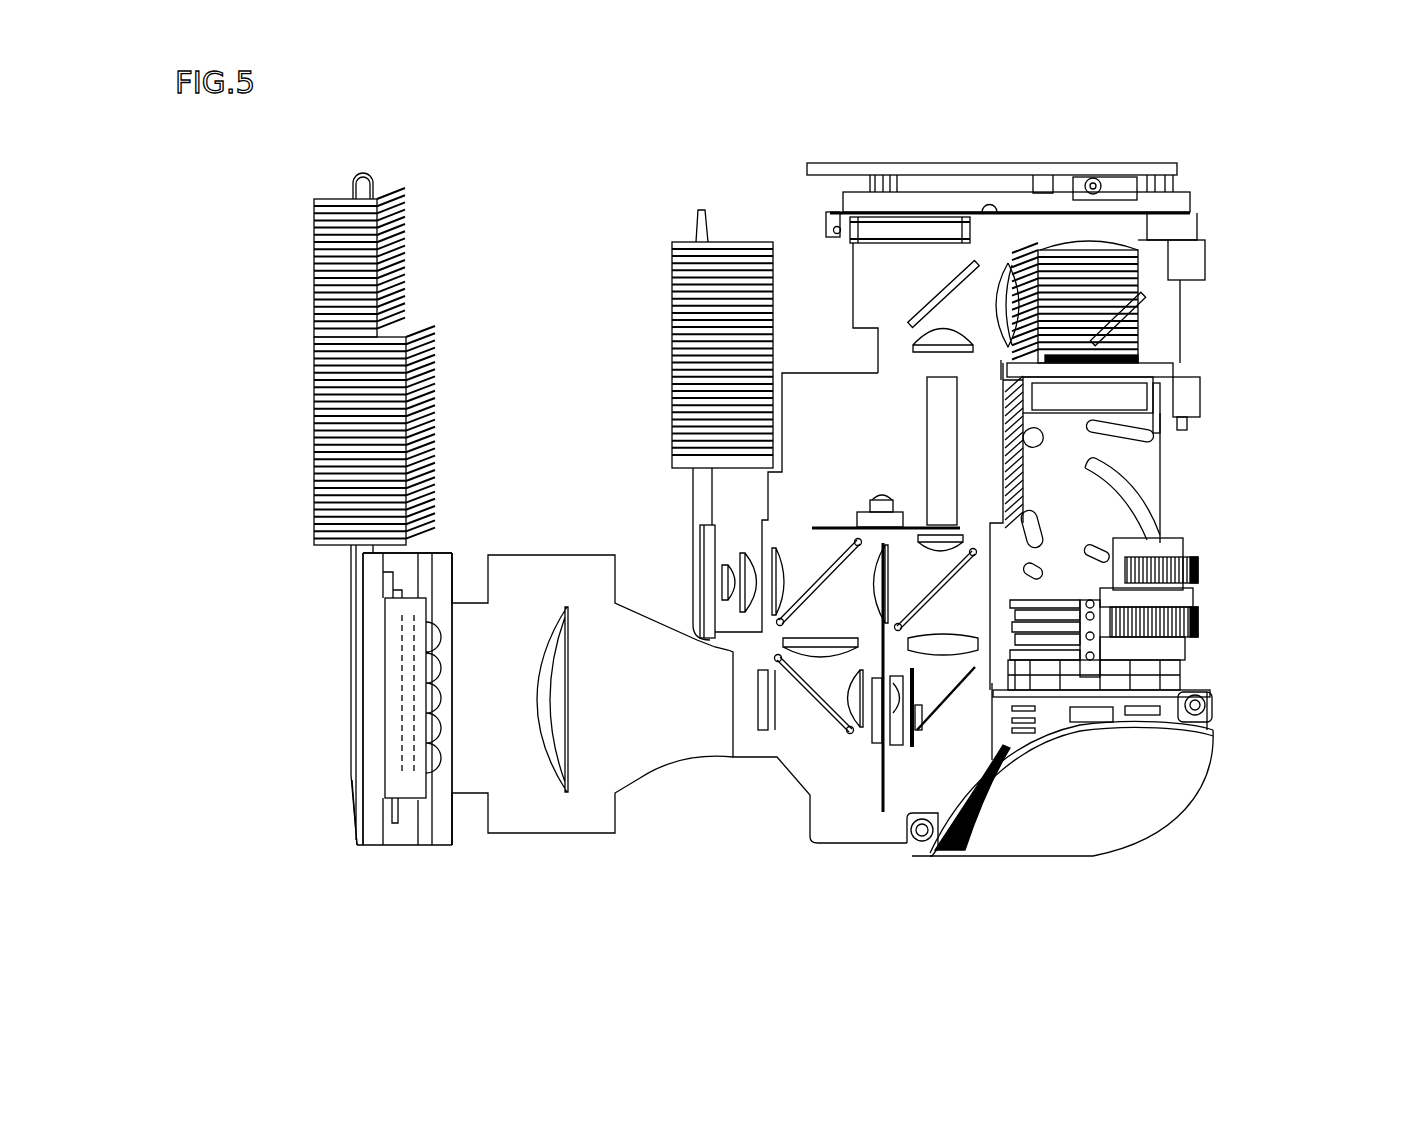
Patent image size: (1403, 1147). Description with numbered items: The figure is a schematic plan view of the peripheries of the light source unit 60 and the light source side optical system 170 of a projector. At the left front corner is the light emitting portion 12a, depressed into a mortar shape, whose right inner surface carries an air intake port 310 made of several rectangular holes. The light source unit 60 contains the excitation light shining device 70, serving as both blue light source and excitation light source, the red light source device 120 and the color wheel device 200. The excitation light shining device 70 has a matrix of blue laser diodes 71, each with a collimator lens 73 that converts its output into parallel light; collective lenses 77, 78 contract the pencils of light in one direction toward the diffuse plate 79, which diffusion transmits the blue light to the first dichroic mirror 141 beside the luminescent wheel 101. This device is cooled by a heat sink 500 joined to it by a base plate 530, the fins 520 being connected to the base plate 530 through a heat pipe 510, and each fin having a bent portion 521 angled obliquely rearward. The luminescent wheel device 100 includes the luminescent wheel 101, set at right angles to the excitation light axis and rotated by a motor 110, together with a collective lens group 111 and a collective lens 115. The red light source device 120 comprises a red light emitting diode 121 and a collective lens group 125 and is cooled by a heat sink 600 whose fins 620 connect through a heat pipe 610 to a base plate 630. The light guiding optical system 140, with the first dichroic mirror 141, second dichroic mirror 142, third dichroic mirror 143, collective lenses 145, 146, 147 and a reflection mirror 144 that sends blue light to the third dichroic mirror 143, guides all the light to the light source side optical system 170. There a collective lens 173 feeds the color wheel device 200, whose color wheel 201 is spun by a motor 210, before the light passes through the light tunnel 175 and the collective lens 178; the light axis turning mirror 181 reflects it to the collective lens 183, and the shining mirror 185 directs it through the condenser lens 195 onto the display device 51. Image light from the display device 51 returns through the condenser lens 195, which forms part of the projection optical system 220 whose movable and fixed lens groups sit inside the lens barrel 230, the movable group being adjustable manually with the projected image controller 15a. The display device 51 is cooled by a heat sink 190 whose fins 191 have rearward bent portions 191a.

The light emitting portion 12a is at (1118, 780).
The projected image controller 15a is at (1214, 601).
The display device 51 is at (1206, 256).
The light source unit 60 is at (679, 772).
The excitation light shining device 70 is at (445, 600).
The blue laser diodes 71 is at (388, 695).
The collimator lenses 73 is at (430, 640).
The collective lens 77 is at (545, 790).
The collective lens 78 is at (772, 733).
The diffuse plate 79 is at (766, 732).
The luminescent wheel device 100 is at (949, 830).
The luminescent wheel 101 is at (883, 808).
The motor 110 is at (918, 738).
The collective lens group 111 is at (868, 742).
The collective lens 115 is at (960, 700).
The red light source device 120 is at (719, 437).
The red light emitting diode 121 is at (722, 582).
The collective lens group 125 is at (740, 544).
The light guiding optical system 140 is at (753, 733).
The first dichroic mirror 141 is at (812, 660).
The second dichroic mirror 142 is at (845, 567).
The third dichroic mirror 143 is at (1100, 608).
The reflection mirror 144 is at (985, 705).
The collective lens 145 is at (800, 703).
The collective lens 146 is at (890, 594).
The collective lens 147 is at (1097, 692).
The light source side optical system 170 is at (928, 265).
The collective lens 173 is at (1000, 538).
The light tunnel 175 is at (925, 405).
The collective lens 178 is at (912, 346).
The light axis turning mirror 181 is at (938, 290).
The collective lens 183 is at (1008, 290).
The shining mirror 185 is at (1120, 315).
The heat sink 190 is at (1058, 229).
The fins 191 is at (1170, 214).
The bent portion 191a is at (1022, 235).
The condenser lens 195 is at (1090, 240).
The color wheel device 200 is at (845, 485).
The color wheel 201 is at (850, 525).
The motor 210 is at (885, 490).
The projection optical system 220 is at (1130, 487).
The lens barrel 230 is at (1130, 467).
The air intake port 310 is at (935, 838).
The heat sink 500 is at (321, 473).
The heat pipe 510 is at (345, 730).
The fins 520 is at (321, 323).
The bent portion 521 is at (390, 190).
The base plate 530 is at (372, 783).
The heat sink 600 is at (666, 425).
The heat pipe 610 is at (694, 490).
The fins 620 is at (670, 292).
The base plate 630 is at (708, 562).